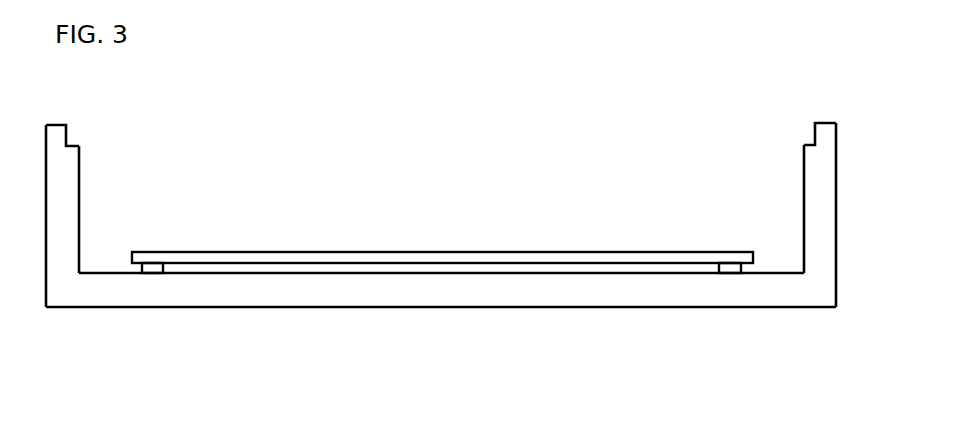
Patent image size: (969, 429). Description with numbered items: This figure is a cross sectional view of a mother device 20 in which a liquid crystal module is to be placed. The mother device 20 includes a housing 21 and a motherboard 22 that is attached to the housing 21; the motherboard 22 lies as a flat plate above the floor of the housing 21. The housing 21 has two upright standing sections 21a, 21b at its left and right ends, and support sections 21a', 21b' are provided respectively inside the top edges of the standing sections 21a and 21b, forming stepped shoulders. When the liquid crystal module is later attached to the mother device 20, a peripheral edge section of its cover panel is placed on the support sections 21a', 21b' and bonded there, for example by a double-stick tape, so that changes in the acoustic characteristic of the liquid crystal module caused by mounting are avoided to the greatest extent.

The mother device 20 is at (447, 328).
The housing 21 is at (140, 308).
The standing section 21a is at (87, 216).
The support section 21a' is at (88, 114).
The standing section 21b is at (774, 215).
The support section 21b' is at (774, 123).
The motherboard 22 is at (422, 253).